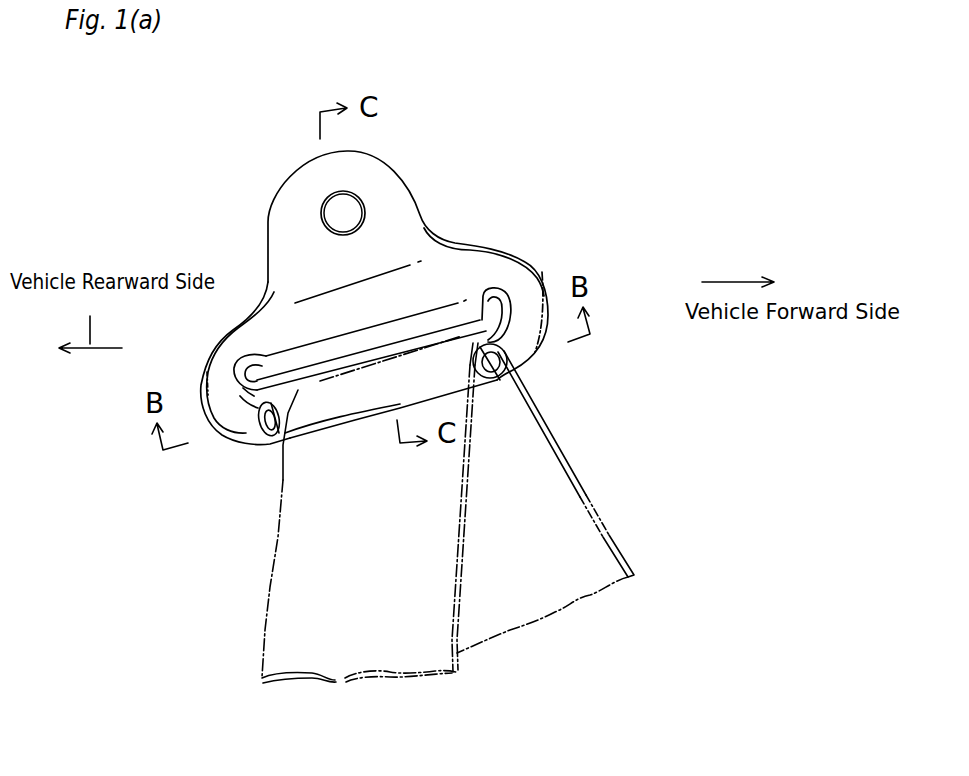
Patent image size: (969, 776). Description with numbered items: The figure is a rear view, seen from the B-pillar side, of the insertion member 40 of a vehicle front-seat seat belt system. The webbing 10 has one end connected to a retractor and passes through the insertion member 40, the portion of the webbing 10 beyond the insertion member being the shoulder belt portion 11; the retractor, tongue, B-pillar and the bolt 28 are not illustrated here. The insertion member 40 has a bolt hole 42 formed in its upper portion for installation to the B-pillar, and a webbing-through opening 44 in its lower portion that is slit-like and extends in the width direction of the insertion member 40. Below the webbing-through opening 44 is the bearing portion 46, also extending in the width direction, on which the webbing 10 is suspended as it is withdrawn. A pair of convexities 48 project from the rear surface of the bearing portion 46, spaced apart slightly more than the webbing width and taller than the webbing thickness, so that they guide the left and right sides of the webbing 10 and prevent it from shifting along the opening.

The webbing 10 is at (252, 635).
The shoulder belt portion 11 is at (575, 553).
The bolt 28 is at (347, 206).
The insertion member 40 is at (234, 271).
The bolt hole 42 is at (354, 222).
The webbing-through opening 44 is at (505, 306).
The bearing portion 46 is at (445, 385).
The convexities or steps 48 is at (260, 430).